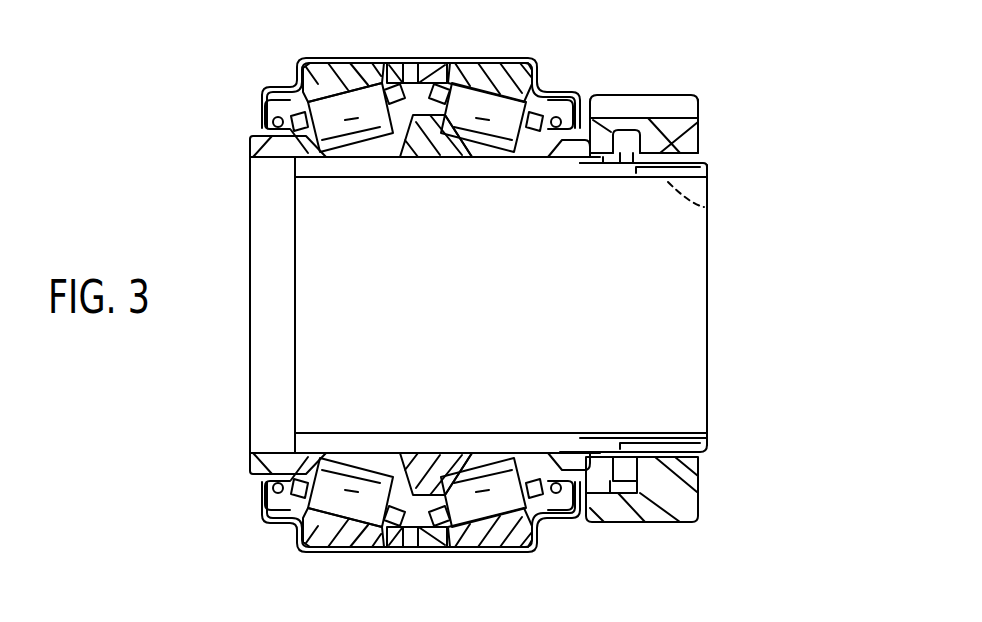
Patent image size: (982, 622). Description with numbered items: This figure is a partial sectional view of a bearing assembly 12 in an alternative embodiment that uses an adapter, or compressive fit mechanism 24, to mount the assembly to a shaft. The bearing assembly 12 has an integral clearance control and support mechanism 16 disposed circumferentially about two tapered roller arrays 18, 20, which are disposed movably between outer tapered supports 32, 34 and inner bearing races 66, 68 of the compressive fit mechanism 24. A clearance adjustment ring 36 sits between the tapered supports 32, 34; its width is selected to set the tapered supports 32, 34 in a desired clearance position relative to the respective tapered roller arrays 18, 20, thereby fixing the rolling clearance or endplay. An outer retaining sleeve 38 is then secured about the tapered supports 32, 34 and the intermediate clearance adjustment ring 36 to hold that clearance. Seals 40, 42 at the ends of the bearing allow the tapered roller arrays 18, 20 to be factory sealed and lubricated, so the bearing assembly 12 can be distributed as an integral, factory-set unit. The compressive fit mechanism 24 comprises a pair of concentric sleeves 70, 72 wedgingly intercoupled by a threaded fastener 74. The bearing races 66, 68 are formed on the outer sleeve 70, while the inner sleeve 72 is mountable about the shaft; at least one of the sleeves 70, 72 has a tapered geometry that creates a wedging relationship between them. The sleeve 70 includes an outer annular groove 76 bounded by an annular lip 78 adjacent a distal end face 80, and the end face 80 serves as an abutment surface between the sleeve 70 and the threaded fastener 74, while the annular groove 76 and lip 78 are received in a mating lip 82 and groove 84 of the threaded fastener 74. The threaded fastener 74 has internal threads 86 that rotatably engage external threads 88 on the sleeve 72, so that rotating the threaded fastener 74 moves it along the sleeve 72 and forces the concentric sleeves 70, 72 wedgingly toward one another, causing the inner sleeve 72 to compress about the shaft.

The bearing assembly 12 is at (784, 288).
The integral clearance control and support mechanism 16 is at (310, 36).
The tapered roller array 18 is at (344, 157).
The tapered roller array 20 is at (486, 150).
The compressive fit mechanism 24 is at (724, 84).
The tapered support 32 is at (312, 82).
The tapered support 34 is at (504, 80).
The clearance adjustment ring 36 is at (393, 62).
The outer retaining sleeve 38 is at (340, 60).
The seal 40 is at (258, 117).
The seal 42 is at (576, 95).
The bearing race 66 is at (378, 158).
The bearing race 68 is at (480, 153).
The sleeve 70 is at (248, 148).
The sleeve 72 is at (301, 176).
The threaded fastener 74 is at (700, 140).
The outer annular groove 76 is at (600, 183).
The annular lip 78 is at (627, 180).
The end face 80 is at (672, 118).
The mating lip 82 is at (602, 130).
The groove 84 is at (628, 128).
The internal threads 86 is at (712, 207).
The external threads 88 is at (646, 180).